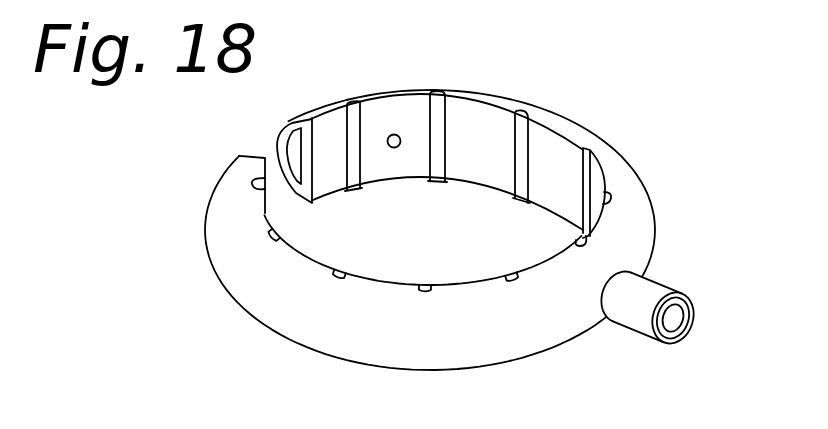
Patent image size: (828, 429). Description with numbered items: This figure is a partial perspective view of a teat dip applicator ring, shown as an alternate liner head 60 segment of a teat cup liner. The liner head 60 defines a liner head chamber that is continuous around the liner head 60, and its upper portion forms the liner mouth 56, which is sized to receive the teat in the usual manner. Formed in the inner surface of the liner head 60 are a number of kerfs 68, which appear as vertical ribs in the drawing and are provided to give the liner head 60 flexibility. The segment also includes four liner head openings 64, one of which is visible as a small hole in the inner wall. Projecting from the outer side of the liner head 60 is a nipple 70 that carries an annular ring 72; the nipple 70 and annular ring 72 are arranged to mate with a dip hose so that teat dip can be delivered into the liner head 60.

The liner mouth 56 is at (456, 130).
The liner head 60 is at (485, 204).
The liner head opening 64 is at (390, 136).
The kerf 68 is at (444, 128).
The nipple 70 is at (683, 311).
The annular ring 72 is at (675, 341).